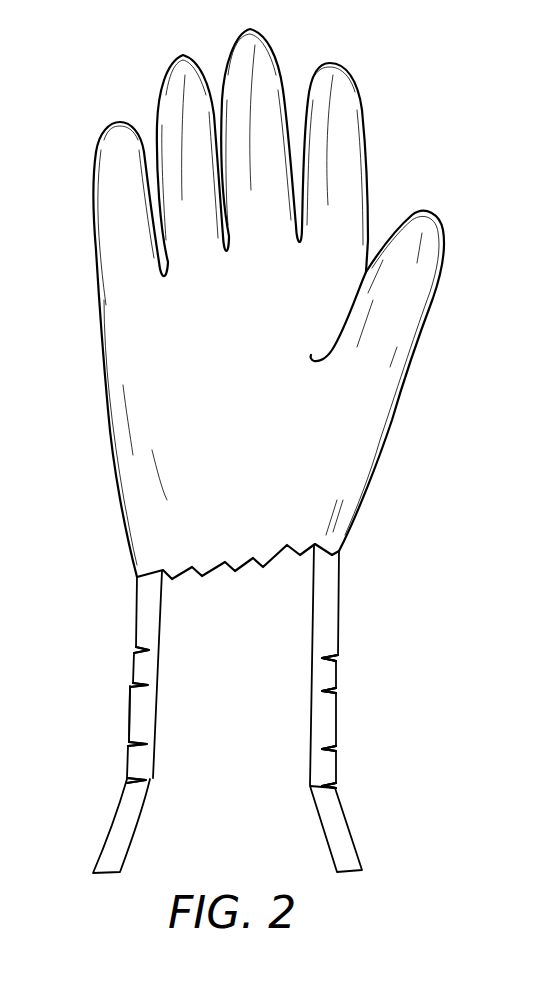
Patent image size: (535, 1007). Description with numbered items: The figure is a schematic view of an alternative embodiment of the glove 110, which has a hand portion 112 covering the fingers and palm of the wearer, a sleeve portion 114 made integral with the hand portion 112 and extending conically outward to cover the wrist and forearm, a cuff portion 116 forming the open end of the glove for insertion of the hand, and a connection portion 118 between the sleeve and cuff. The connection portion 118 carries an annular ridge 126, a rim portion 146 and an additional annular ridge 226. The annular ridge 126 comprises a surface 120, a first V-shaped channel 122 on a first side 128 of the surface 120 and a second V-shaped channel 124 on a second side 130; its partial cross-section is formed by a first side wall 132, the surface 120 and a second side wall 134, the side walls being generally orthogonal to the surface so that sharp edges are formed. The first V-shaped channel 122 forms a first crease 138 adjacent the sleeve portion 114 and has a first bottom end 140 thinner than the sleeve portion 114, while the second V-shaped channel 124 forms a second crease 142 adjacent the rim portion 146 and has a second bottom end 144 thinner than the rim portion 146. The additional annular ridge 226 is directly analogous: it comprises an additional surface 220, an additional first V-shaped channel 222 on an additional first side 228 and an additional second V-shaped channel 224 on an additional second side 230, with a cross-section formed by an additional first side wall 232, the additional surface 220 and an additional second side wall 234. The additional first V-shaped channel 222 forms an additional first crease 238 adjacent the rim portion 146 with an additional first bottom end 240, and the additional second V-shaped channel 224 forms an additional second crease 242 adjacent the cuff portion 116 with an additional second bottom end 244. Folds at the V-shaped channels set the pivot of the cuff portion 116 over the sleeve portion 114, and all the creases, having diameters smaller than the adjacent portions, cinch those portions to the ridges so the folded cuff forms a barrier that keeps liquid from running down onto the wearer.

The glove 110 is at (123, 109).
The hand portion 112 is at (113, 408).
The sleeve portion 114 is at (334, 588).
The cuff portion 116 is at (345, 841).
The connection portion 118 is at (150, 704).
The surface 120 is at (339, 671).
The first V-shaped channel 122 is at (326, 653).
The second V-shaped channel 124 is at (334, 691).
The annular ridge 126 is at (135, 665).
The first side 128 is at (137, 649).
The second side 130 is at (133, 684).
The first side wall 132 is at (340, 657).
The second side wall 134 is at (338, 690).
The first crease 138 is at (150, 650).
The first bottom end 140 is at (322, 657).
The second crease 142 is at (150, 684).
The second bottom end 144 is at (323, 689).
The rim portion 146 is at (129, 714).
The additional surface 220 is at (338, 766).
The additional first V-shaped channel 222 is at (324, 746).
The additional second V-shaped channel 224 is at (331, 789).
The additional annular ridge 226 is at (128, 776).
The additional first side 228 is at (131, 745).
The additional second side 230 is at (127, 783).
The additional first side wall 232 is at (338, 748).
The additional second side wall 234 is at (336, 787).
The additional first crease 238 is at (150, 745).
The additional first bottom end 240 is at (334, 750).
The additional second crease 242 is at (148, 779).
The additional second bottom end 244 is at (325, 785).